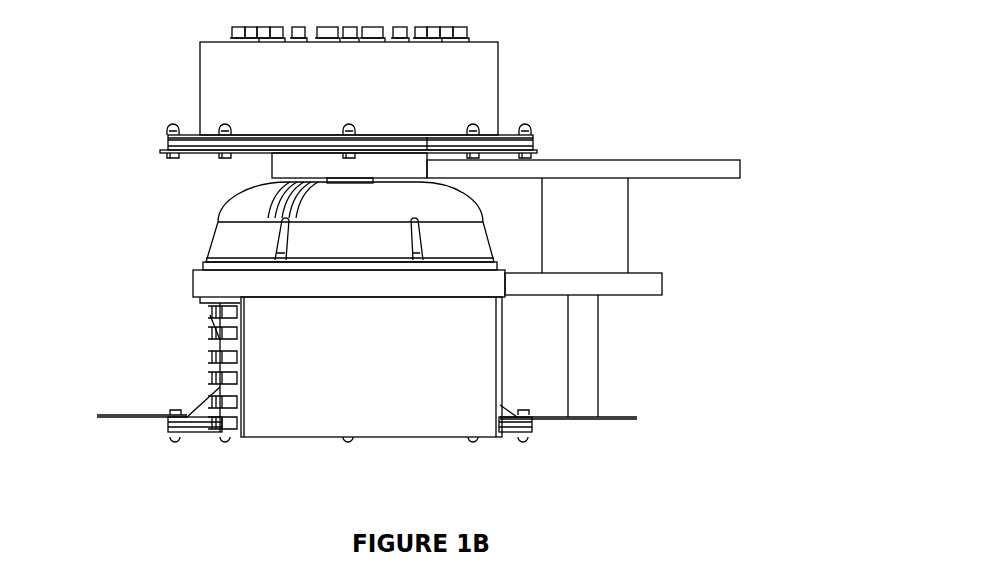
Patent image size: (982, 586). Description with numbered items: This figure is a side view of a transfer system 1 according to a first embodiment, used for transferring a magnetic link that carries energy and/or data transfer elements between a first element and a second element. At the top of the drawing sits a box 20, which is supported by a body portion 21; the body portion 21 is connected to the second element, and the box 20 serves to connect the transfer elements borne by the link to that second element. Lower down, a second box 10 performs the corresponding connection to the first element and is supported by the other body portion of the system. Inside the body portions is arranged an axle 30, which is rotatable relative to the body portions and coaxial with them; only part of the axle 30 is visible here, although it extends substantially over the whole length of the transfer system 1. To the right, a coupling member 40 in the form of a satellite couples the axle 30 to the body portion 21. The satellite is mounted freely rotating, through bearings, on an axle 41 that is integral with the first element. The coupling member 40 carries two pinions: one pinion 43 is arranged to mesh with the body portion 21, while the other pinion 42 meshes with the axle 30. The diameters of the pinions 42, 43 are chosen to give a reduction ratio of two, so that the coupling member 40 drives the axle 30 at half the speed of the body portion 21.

The transfer system 1 is at (101, 306).
The box 10 is at (413, 420).
The box 20 is at (482, 77).
The body portion 21 is at (270, 164).
The axle 30 is at (193, 288).
The coupling member 40 is at (620, 288).
The axle 41 is at (597, 380).
The pinion 42 is at (657, 300).
The pinion 43 is at (740, 165).